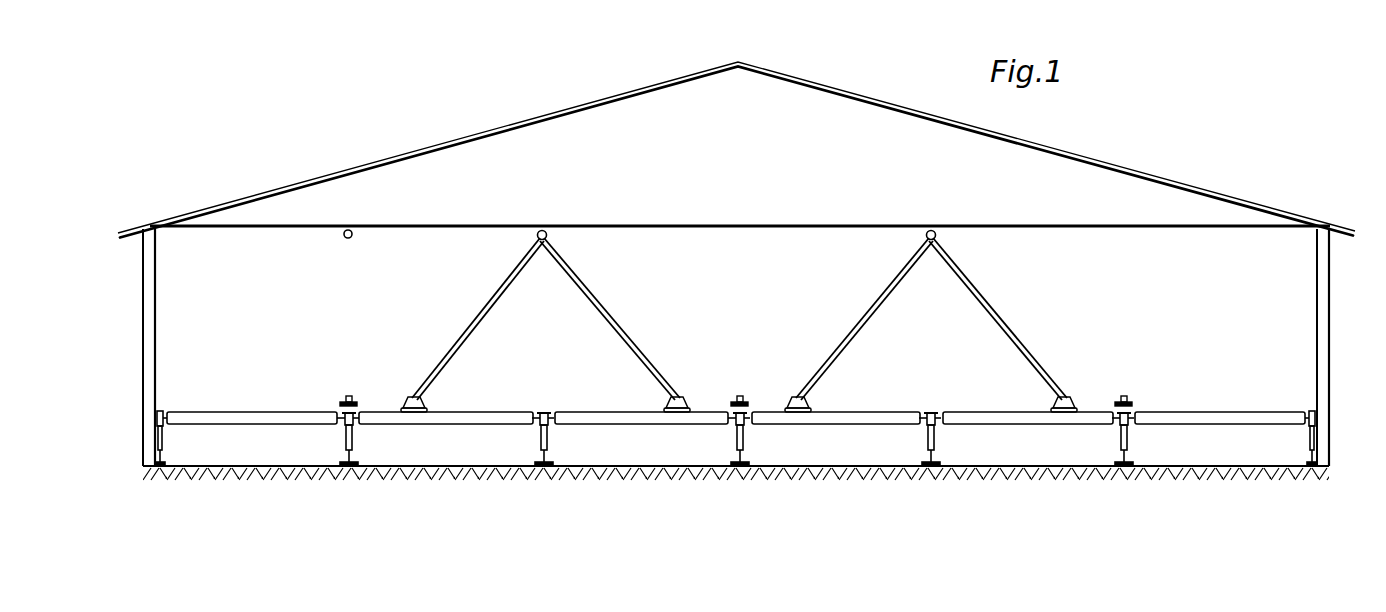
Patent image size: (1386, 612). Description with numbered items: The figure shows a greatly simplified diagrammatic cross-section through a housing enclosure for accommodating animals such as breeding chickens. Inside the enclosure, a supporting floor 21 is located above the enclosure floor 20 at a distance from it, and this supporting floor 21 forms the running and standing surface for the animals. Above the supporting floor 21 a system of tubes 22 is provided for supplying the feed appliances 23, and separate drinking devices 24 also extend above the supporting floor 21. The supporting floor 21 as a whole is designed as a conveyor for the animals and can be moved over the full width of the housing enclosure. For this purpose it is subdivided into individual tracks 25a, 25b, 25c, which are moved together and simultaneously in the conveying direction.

The enclosure floor 20 is at (500, 468).
The supporting floor 21 is at (235, 425).
The system of tubes 22 is at (497, 228).
The feed appliances 23 is at (681, 397).
The drinking devices 24 is at (357, 398).
The track 25a is at (1257, 448).
The track 25b is at (1038, 448).
The track 25c is at (848, 448).